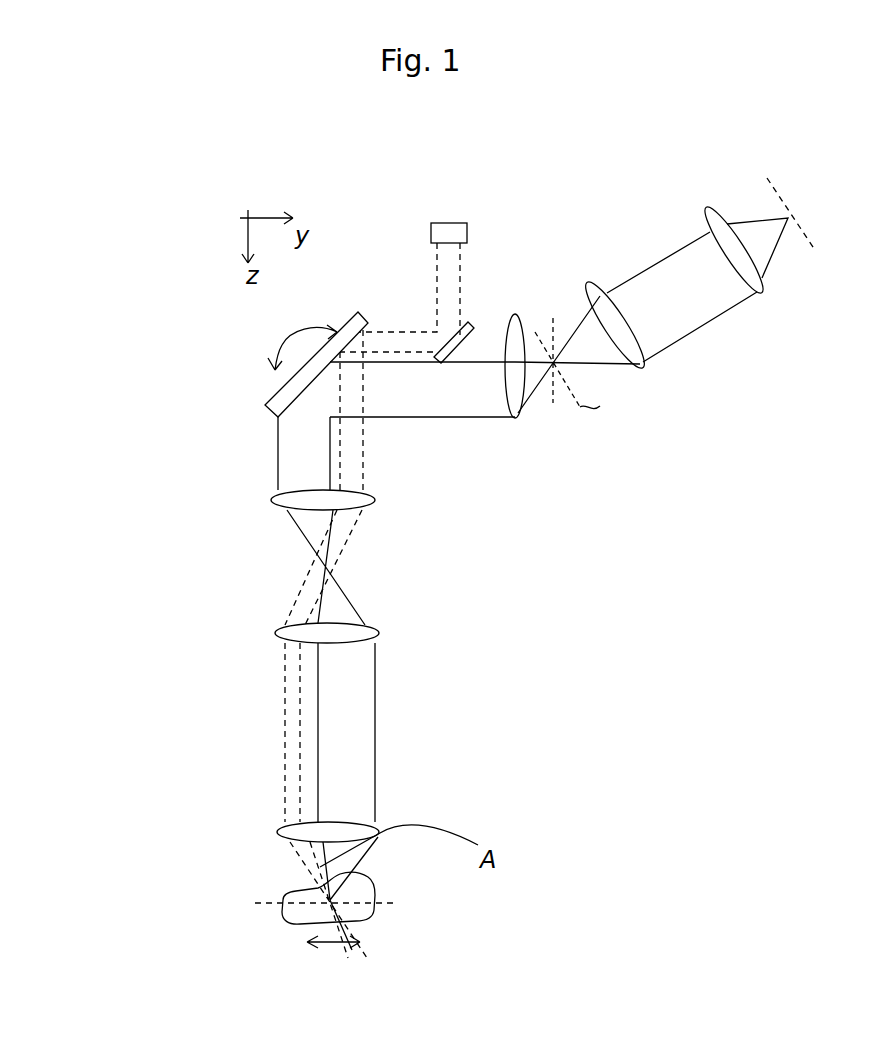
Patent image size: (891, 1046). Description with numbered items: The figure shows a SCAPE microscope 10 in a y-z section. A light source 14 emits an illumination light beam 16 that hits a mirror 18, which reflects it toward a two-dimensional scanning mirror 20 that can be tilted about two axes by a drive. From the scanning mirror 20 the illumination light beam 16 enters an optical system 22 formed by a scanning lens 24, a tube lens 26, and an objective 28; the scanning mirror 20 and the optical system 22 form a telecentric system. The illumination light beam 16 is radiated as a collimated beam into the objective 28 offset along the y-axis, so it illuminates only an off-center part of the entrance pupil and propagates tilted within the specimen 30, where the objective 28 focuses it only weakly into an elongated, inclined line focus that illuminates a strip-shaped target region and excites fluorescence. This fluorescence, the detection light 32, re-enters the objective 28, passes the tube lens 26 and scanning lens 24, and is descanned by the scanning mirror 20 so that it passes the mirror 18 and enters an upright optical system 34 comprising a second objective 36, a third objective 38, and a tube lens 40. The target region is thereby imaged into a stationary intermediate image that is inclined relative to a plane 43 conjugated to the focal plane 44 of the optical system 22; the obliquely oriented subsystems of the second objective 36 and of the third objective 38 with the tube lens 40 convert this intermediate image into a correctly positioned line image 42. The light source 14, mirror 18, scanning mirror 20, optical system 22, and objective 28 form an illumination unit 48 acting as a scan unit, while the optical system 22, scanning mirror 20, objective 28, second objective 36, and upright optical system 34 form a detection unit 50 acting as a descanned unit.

The SCAPE microscope 10 is at (205, 168).
The light source 14 is at (445, 222).
The illumination light beam 16 is at (458, 260).
The mirror 18 is at (458, 335).
The 2D scanning mirror 20 is at (288, 380).
The optical system 22 is at (417, 564).
The scanning lens 24 is at (270, 500).
The tube lens 26 is at (273, 633).
The objective 28 is at (275, 832).
The specimen 30 is at (282, 920).
The detection light 32 is at (375, 712).
The upright optical system 34 is at (718, 379).
The second objective 36 is at (514, 420).
The third objective 38 is at (603, 292).
The tube lens 40 is at (763, 294).
The line image 42 is at (812, 252).
The plane 43 is at (557, 332).
The focal plane 44 is at (393, 903).
The illumination unit 48 is at (371, 222).
The detection unit 50 is at (700, 508).